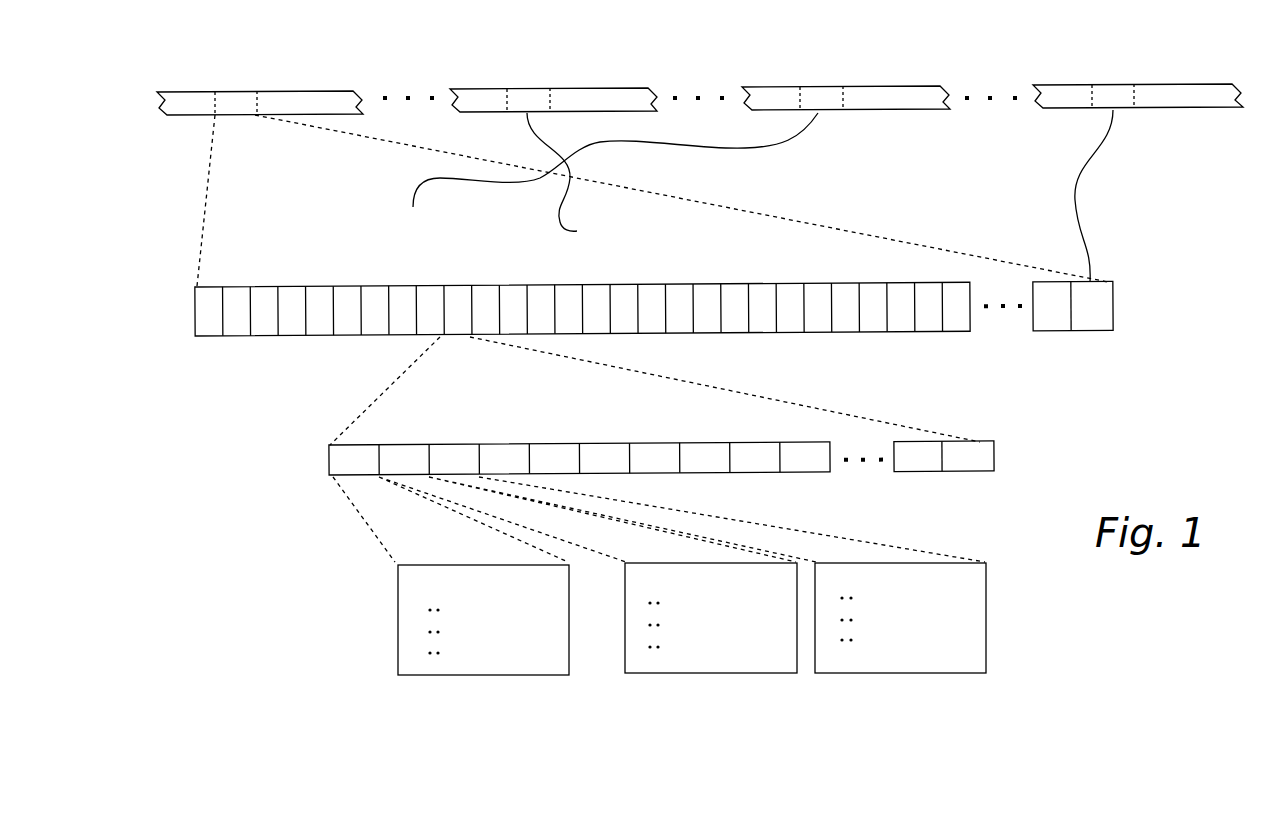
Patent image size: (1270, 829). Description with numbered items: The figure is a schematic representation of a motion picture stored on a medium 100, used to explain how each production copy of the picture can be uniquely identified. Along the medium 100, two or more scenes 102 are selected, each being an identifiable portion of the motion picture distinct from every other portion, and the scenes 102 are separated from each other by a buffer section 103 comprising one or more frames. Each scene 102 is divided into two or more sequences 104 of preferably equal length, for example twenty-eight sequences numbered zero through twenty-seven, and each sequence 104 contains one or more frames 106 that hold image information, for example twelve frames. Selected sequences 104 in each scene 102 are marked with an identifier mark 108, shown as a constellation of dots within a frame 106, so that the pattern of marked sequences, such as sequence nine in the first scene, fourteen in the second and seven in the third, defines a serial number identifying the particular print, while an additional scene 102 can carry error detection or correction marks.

The medium 100 is at (277, 92).
The scene 102 is at (234, 92).
The buffer section 103 is at (330, 92).
The sequence 104 is at (212, 287).
The frame 106 is at (967, 474).
The mark 108 is at (425, 660).